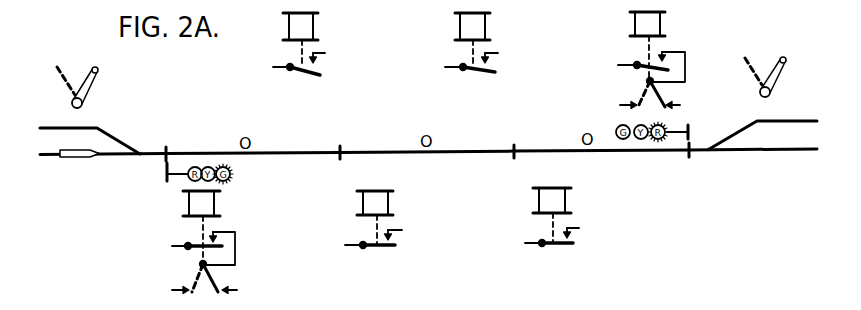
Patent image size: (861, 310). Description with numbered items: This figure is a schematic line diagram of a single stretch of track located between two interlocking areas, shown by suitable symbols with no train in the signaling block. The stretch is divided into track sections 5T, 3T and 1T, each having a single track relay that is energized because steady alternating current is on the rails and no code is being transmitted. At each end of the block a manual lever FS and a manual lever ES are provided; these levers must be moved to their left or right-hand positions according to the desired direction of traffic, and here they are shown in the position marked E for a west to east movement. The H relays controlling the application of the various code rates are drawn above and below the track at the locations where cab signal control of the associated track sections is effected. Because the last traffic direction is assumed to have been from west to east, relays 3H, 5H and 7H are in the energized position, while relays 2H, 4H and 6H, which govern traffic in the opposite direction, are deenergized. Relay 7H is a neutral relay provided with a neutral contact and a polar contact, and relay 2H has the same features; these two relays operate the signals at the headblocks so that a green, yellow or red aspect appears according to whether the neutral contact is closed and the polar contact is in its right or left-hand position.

The relay 2H is at (657, 25).
The relay 3H is at (562, 202).
The relay 4H is at (482, 27).
The relay 5H is at (385, 203).
The relay 6H is at (310, 27).
The neutral relay 7H is at (210, 204).
The track section 1T is at (642, 152).
The track section 3T is at (465, 153).
The track section 5T is at (306, 154).
The lever FS is at (93, 92).
The lever ES is at (777, 83).